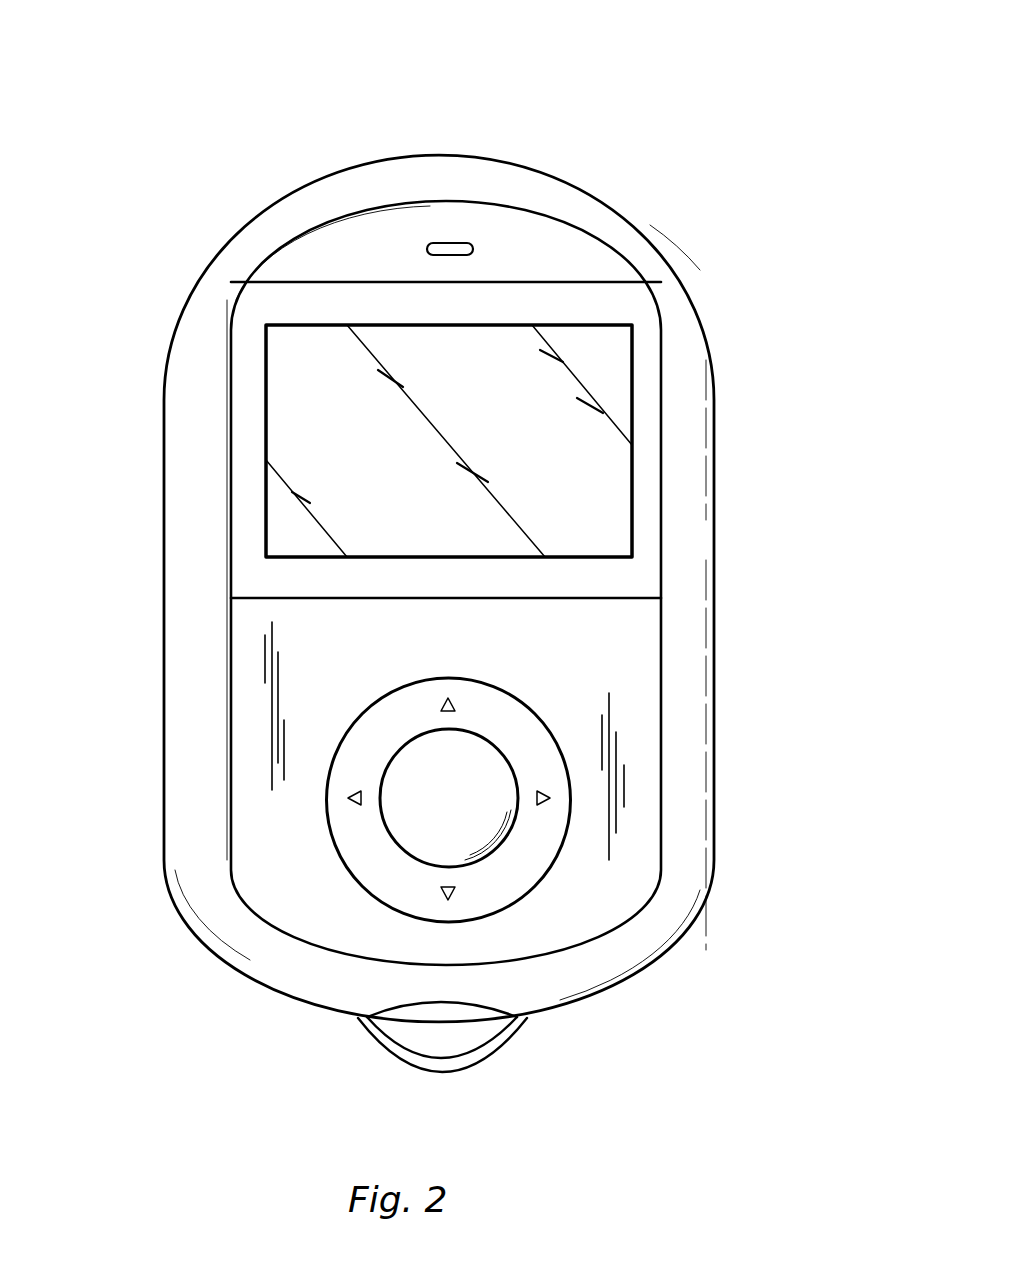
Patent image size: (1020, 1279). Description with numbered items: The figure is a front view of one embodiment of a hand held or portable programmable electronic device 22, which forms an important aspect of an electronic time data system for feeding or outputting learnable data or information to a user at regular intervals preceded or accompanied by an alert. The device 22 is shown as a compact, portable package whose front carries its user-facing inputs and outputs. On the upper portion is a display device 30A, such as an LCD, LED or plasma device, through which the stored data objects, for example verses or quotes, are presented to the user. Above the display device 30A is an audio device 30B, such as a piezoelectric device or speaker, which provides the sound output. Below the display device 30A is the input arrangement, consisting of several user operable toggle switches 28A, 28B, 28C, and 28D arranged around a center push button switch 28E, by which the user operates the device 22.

The portable programmable electronic device 22 is at (754, 98).
The display device 30A is at (596, 506).
The audio device 30B is at (453, 243).
The toggle switch 28A is at (448, 677).
The toggle switch 28B is at (453, 924).
The toggle switch 28C is at (327, 797).
The toggle switch 28D is at (570, 798).
The center push button switch 28E is at (472, 762).